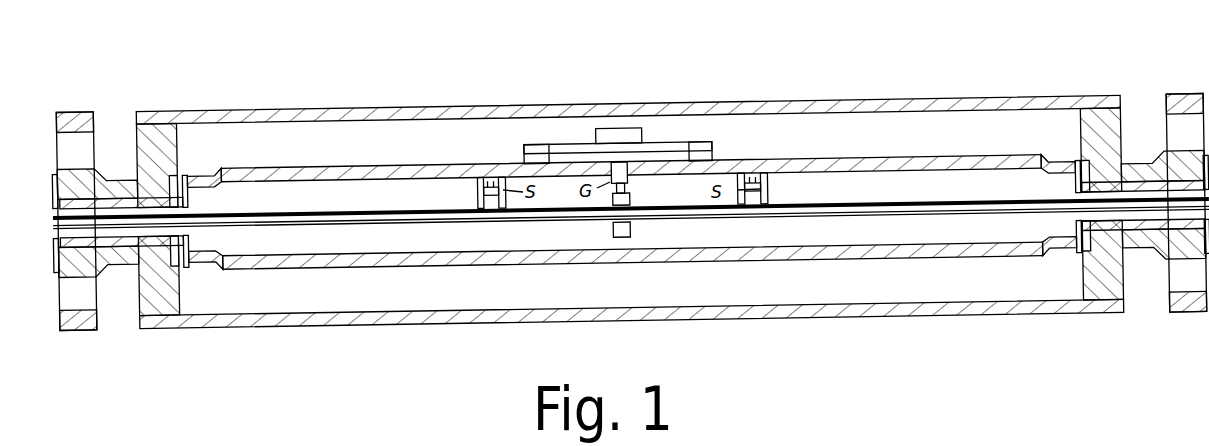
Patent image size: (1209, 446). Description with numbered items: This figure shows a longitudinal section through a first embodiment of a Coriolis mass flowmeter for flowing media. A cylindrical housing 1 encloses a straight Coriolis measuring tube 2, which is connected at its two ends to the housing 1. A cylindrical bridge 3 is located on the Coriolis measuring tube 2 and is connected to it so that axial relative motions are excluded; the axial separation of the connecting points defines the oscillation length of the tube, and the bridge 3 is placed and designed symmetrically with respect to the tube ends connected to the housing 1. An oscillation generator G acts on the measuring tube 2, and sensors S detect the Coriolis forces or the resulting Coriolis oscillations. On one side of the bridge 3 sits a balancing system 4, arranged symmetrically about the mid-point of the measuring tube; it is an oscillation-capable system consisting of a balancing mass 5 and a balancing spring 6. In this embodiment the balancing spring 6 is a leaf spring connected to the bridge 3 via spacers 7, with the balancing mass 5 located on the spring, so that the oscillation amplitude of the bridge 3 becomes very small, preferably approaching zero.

The housing 1 is at (207, 320).
The Coriolis measuring tube 2 is at (347, 222).
The bridge 3 is at (858, 253).
The balancing system 4 is at (624, 86).
The balancing mass 5 is at (547, 88).
The balancing spring 6 is at (683, 141).
The spacer 7 is at (525, 152).